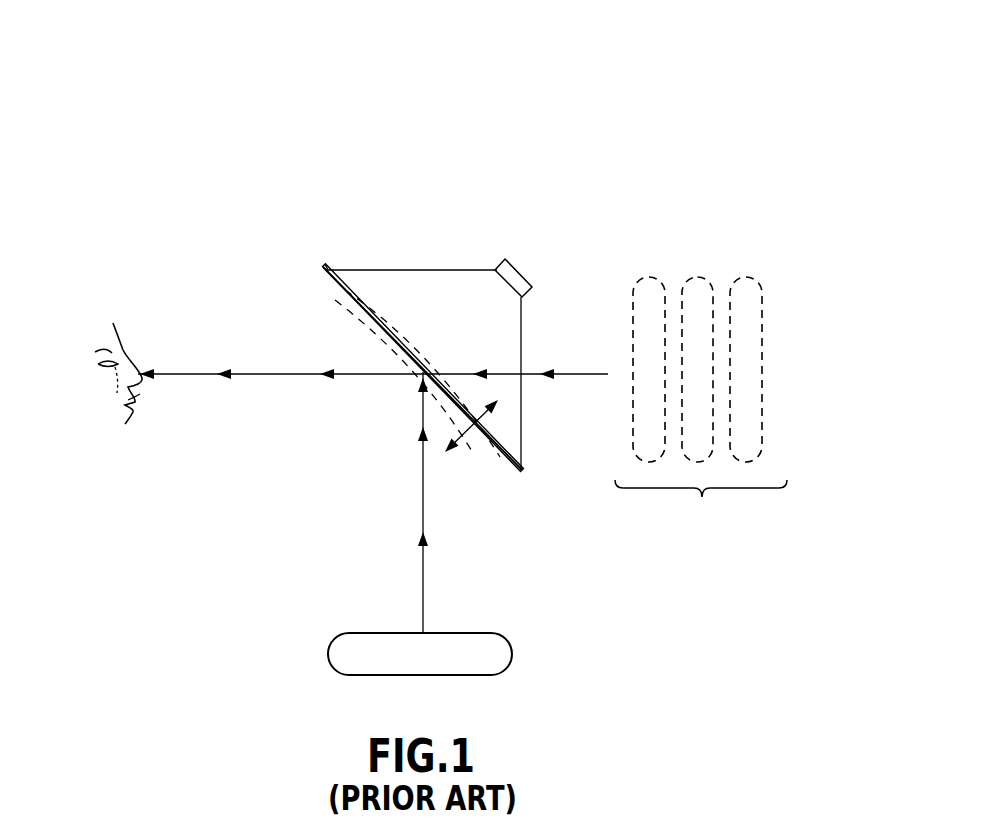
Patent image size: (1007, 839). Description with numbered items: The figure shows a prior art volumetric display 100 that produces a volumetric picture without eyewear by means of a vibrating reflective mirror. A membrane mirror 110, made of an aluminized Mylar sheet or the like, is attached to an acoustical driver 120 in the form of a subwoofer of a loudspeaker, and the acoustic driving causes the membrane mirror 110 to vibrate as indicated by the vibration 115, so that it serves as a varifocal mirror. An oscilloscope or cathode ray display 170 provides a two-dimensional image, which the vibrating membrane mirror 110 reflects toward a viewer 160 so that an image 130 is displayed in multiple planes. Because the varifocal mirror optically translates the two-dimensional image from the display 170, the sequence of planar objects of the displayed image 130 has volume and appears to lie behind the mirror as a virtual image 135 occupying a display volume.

The volumetric display 100 is at (620, 103).
The membrane mirror 110 is at (400, 306).
The vibration of the membrane mirror 115 is at (472, 424).
The acoustical driver 120 is at (544, 306).
The image 130 is at (181, 371).
The virtual image 135 is at (701, 431).
The viewer 160 is at (109, 320).
The cathode ray display 170 is at (509, 643).